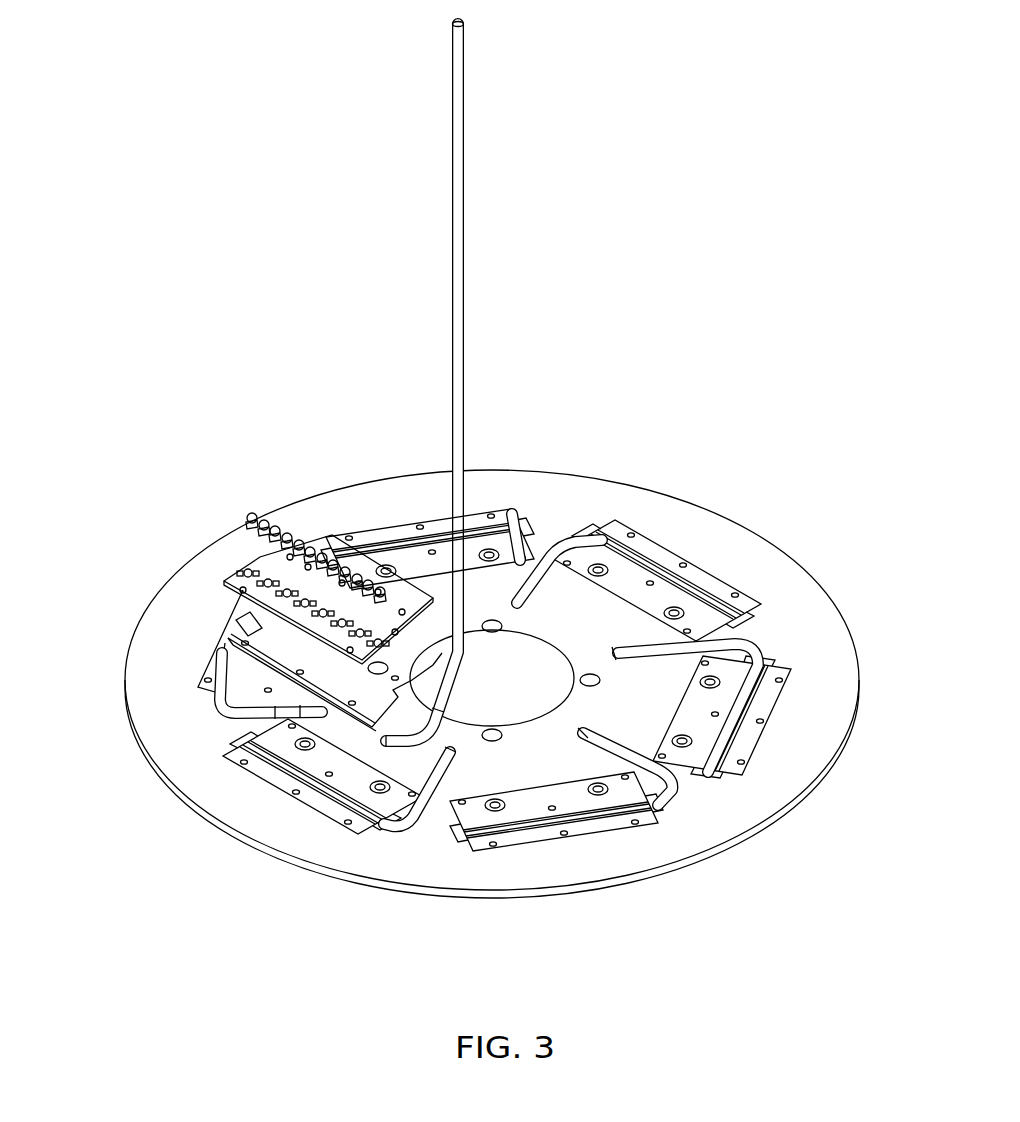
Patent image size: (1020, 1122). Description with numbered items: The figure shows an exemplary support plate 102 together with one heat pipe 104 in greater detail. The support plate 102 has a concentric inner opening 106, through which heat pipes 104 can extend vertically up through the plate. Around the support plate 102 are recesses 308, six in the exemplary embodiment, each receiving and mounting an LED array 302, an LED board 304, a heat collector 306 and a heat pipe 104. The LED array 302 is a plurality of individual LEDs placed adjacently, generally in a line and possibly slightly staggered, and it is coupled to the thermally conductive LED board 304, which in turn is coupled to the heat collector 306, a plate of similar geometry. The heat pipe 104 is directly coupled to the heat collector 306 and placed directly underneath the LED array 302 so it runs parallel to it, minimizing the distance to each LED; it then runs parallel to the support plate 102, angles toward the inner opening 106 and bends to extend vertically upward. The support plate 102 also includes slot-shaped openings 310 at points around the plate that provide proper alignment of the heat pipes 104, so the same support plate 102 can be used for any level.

The support plate 102 is at (755, 550).
The heat pipe 104 is at (463, 92).
The inner opening 106 is at (518, 663).
The LED array 302 is at (250, 517).
The LED board 304 is at (247, 560).
The heat collector 306 is at (263, 642).
The recess 308 is at (213, 675).
The opening 310 is at (521, 553).